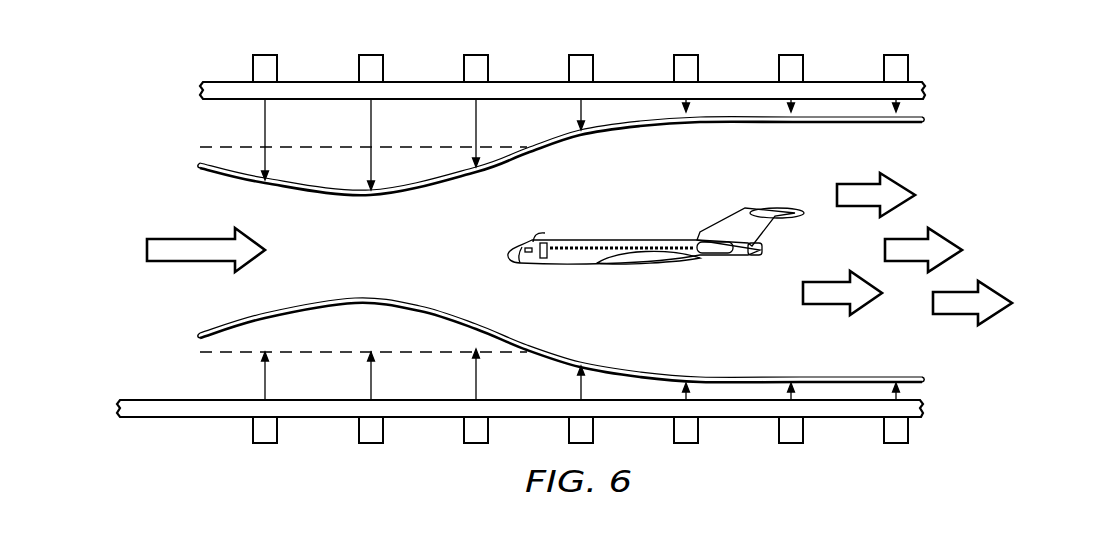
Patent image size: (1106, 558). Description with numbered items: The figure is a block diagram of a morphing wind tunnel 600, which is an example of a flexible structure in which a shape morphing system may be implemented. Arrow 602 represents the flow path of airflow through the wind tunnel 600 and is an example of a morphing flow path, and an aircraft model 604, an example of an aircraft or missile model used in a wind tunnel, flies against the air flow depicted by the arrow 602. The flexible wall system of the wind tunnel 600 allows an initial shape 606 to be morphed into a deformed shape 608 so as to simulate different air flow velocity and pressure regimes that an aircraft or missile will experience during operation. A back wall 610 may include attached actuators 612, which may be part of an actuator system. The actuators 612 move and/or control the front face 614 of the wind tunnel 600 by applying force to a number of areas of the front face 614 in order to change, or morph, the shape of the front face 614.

The wind tunnel 600 is at (991, 95).
The arrow 602 is at (191, 235).
The aircraft model 604 is at (633, 266).
The initial shape 606 is at (232, 147).
The deformed shape 608 is at (613, 135).
The back wall 610 is at (152, 419).
The actuators 612 is at (367, 446).
The front face 614 is at (353, 297).